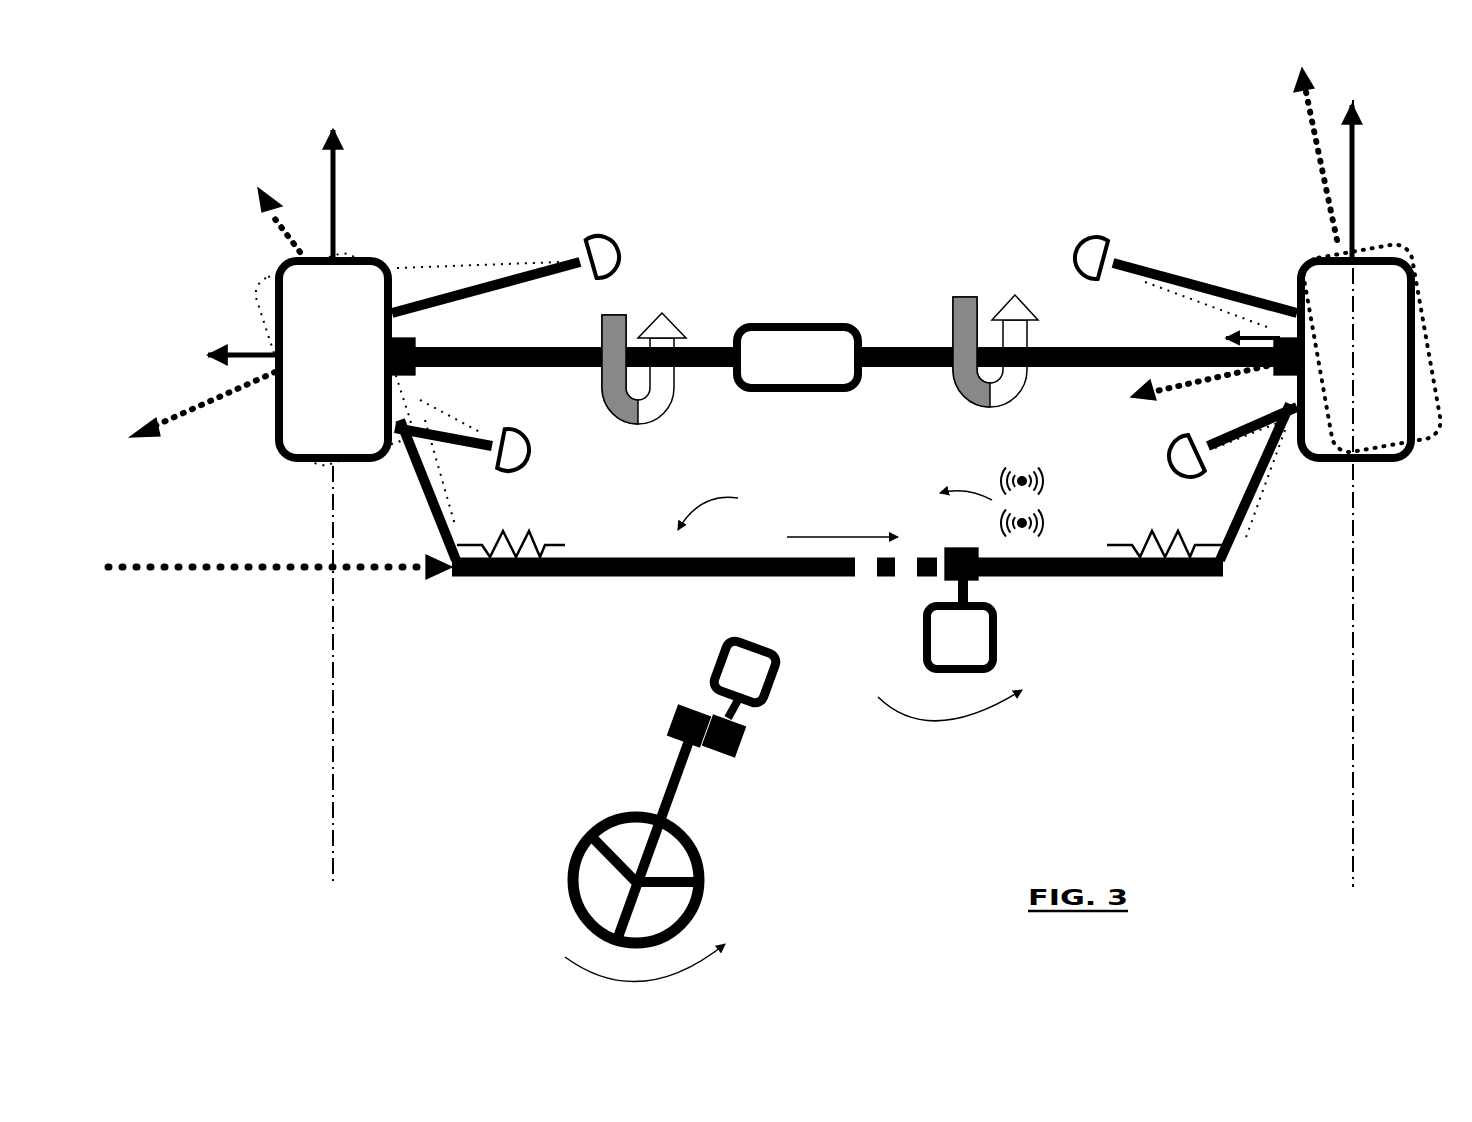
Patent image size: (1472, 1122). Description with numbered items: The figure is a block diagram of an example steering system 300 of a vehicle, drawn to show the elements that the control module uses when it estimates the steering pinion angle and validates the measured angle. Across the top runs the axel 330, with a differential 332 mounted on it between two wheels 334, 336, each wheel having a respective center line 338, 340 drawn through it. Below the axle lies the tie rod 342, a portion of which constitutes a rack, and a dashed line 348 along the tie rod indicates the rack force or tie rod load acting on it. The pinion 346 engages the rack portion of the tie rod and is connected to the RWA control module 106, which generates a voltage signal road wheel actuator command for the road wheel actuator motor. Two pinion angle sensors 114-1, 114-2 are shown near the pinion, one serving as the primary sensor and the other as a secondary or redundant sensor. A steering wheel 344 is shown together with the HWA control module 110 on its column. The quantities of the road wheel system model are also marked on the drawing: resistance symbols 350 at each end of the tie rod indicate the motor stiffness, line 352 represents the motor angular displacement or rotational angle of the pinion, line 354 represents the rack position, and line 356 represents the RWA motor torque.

The steering system 300 is at (897, 141).
The axel 330 is at (530, 367).
The differential 332 is at (780, 328).
The wheel 334 is at (276, 427).
The wheel 336 is at (1396, 463).
The center line 338 is at (690, 577).
The center line 340 is at (1379, 493).
The tie rod 342 is at (726, 508).
The steering wheel 344 is at (568, 881).
The pinion 346 is at (977, 581).
The dashed line 348 is at (280, 557).
The resistance symbols 350 is at (839, 532).
The line 352 is at (966, 512).
The line 354 is at (842, 524).
The line 356 is at (970, 712).
The road wheel actuator control module 106 is at (997, 641).
The hand wheel actuator control module 110 is at (737, 752).
The pinion angle sensor 114-1 is at (1047, 520).
The pinion angle sensor 114-2 is at (1002, 474).